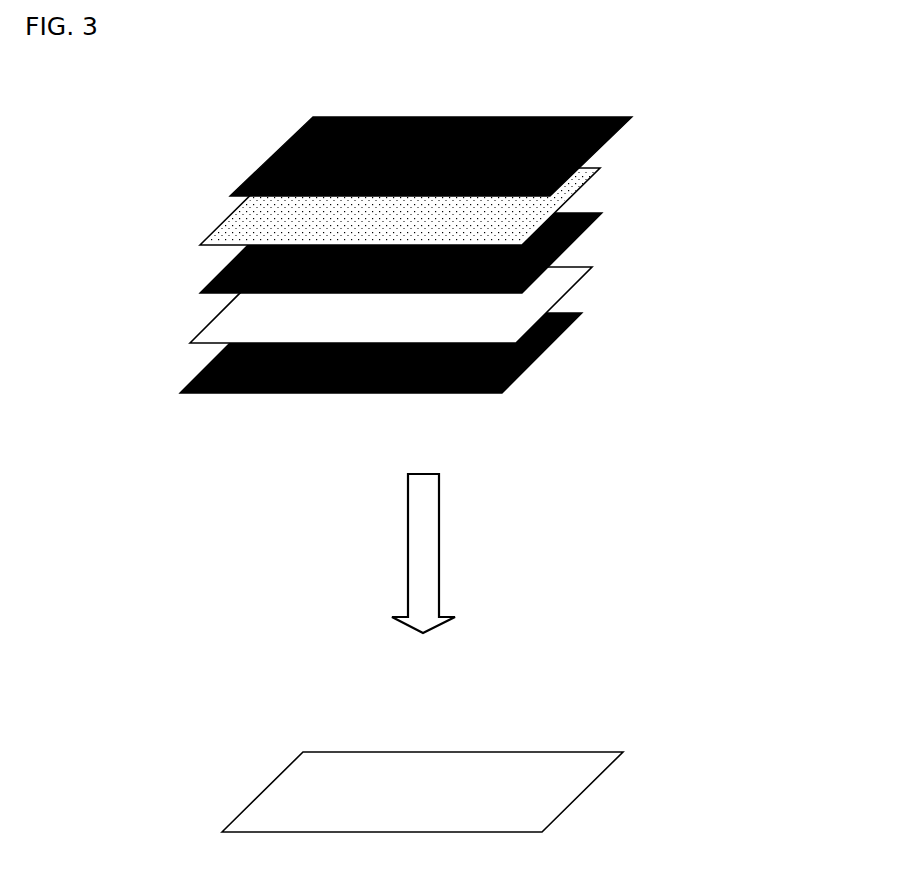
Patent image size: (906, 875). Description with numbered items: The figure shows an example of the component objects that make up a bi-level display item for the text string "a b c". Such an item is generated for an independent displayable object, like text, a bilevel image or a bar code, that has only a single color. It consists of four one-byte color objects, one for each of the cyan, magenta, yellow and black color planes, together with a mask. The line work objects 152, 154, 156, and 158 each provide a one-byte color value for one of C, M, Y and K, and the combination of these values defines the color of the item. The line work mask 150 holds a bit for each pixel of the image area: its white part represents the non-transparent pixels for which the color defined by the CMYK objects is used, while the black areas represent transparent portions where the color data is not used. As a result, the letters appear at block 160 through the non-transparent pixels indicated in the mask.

The line work mask 150 is at (632, 117).
The line work object 152 is at (598, 169).
The line work object 154 is at (583, 233).
The line work object 156 is at (573, 285).
The line work object 158 is at (524, 373).
The block 160 is at (310, 750).